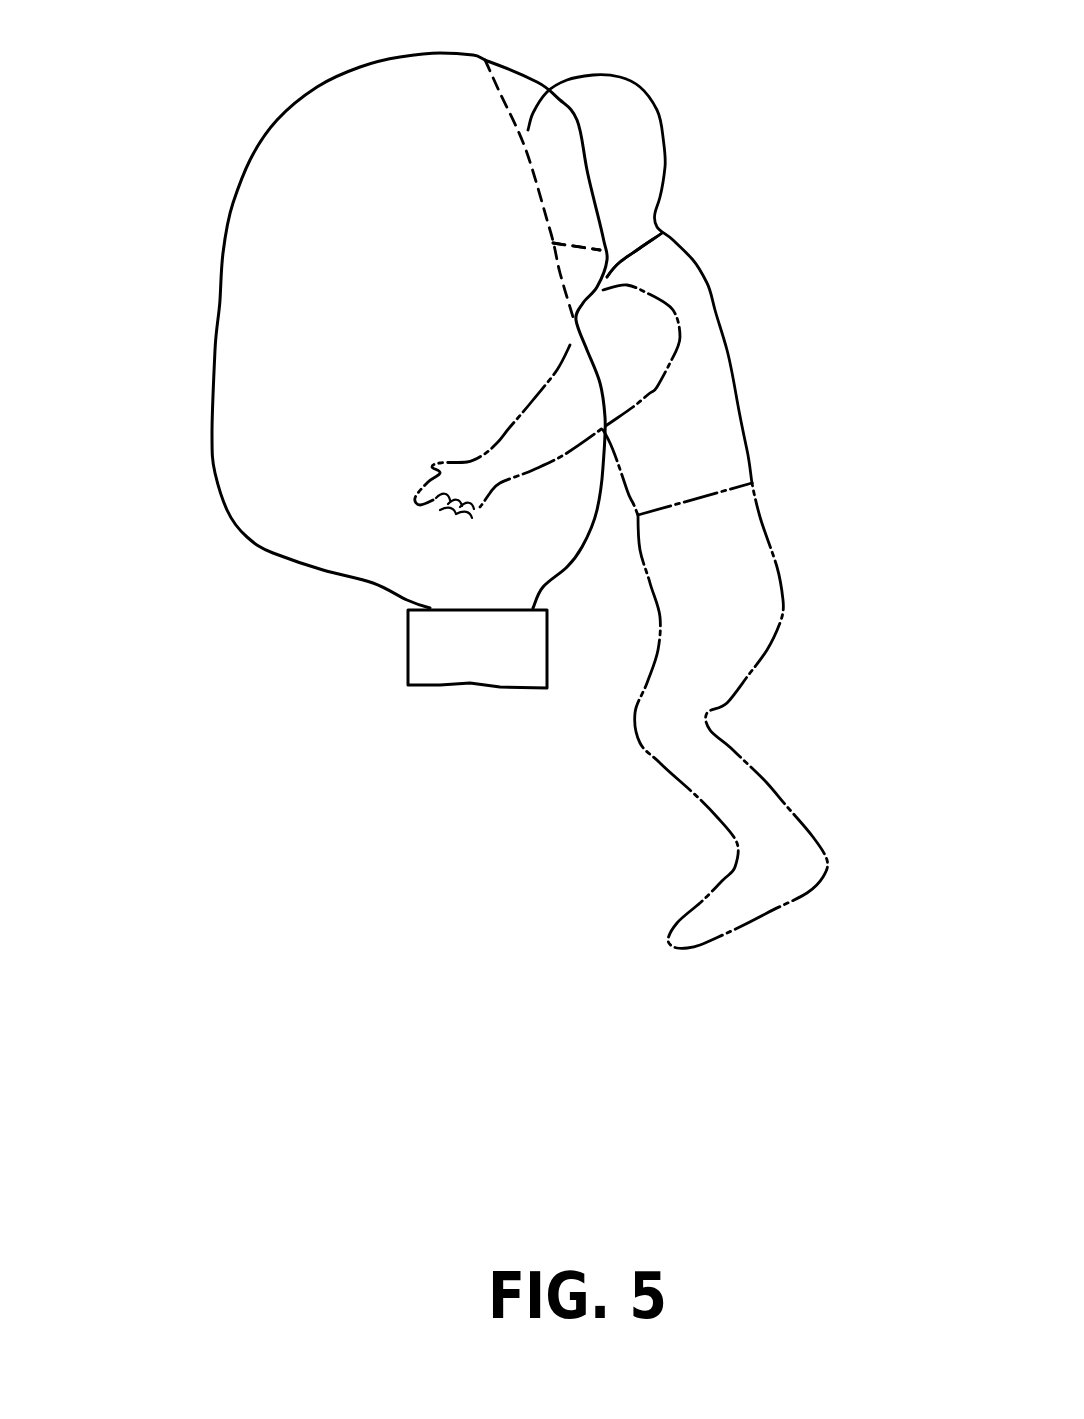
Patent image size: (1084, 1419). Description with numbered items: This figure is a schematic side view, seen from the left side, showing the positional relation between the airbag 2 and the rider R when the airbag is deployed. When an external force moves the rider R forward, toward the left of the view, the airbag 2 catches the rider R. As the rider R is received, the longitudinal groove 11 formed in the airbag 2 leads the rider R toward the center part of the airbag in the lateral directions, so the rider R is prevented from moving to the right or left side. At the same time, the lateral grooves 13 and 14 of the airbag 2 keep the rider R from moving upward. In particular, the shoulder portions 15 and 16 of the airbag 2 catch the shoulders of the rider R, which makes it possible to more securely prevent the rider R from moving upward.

The airbag 2 is at (237, 440).
The longitudinal groove 11 is at (507, 102).
The lateral groove 13 is at (573, 320).
The lateral groove 14 is at (576, 246).
The shoulder portion 15 is at (665, 233).
The shoulder portion 16 is at (634, 255).
The rider R is at (723, 317).